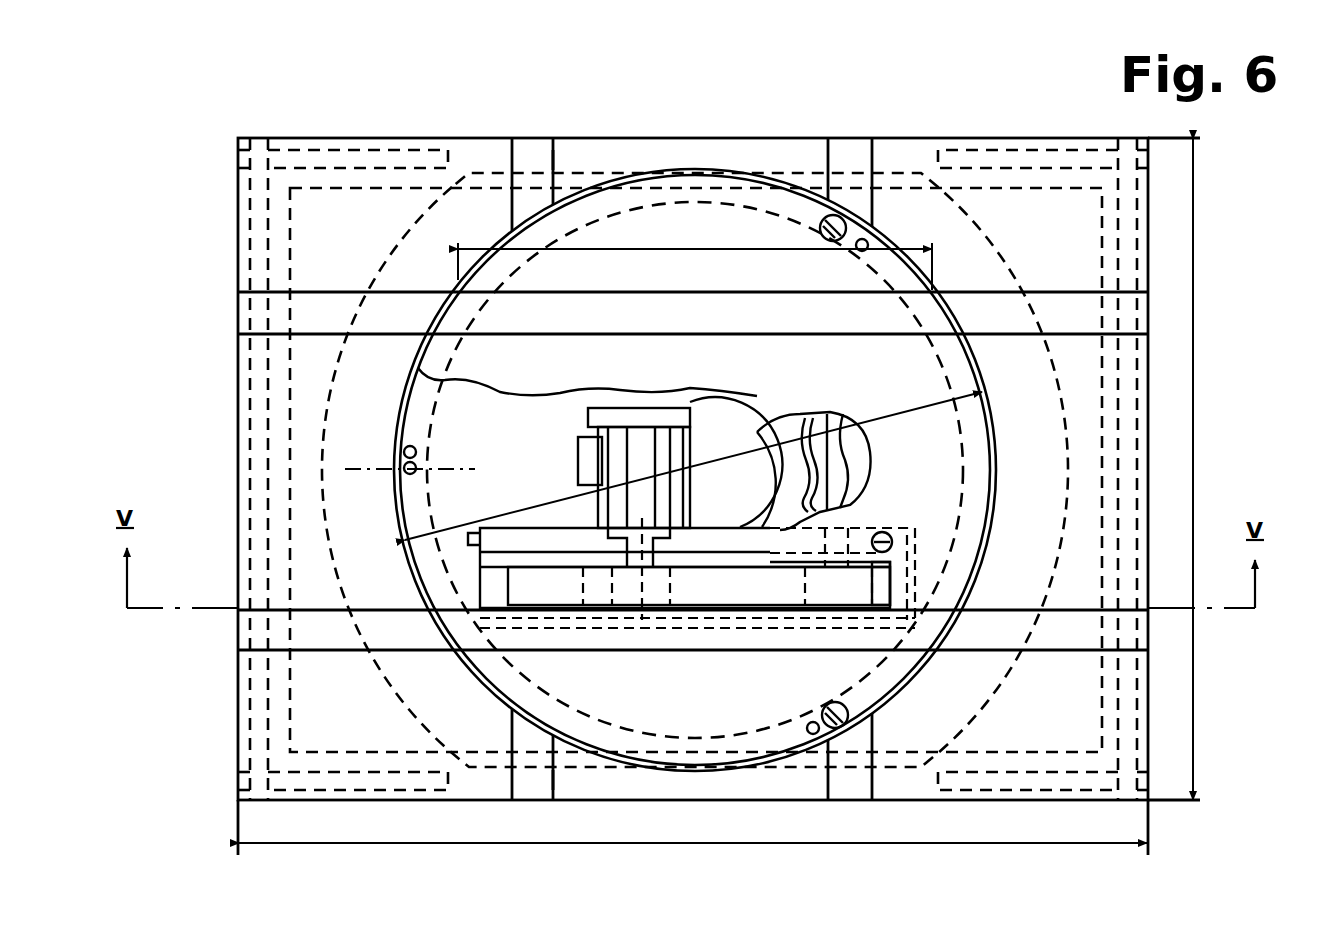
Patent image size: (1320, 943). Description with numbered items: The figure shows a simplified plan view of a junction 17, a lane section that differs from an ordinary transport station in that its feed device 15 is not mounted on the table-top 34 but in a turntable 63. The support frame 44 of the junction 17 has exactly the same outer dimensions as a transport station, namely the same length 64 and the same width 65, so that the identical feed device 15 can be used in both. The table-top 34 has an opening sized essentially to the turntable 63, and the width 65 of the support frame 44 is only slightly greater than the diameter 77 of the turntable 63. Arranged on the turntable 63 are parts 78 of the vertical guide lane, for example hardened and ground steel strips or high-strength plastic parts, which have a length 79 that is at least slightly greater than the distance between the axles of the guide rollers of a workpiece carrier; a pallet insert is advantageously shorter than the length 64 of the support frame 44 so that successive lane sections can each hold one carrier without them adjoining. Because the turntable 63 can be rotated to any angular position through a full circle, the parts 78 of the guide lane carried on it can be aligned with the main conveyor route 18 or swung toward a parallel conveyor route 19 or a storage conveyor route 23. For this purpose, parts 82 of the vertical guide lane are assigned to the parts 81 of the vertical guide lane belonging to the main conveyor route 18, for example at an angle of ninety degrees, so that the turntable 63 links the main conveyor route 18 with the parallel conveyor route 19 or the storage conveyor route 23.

The feed device 15 is at (472, 572).
The junction 17 is at (205, 153).
The main conveyor route 18 is at (1080, 293).
The parallel conveyor route 19 is at (562, 160).
The storage conveyor route 23 is at (562, 777).
The table-top 34 is at (313, 218).
The support frame 44 is at (250, 778).
The turntable 63 is at (690, 225).
The length 64 is at (690, 838).
The width 65 is at (1197, 338).
The diameter 77 is at (925, 407).
The parts of the vertical guide lane 78 is at (512, 316).
The length 79 is at (735, 249).
The parts of the vertical guide lane 81 is at (313, 305).
The parts of the vertical guide lane 82 is at (528, 150).